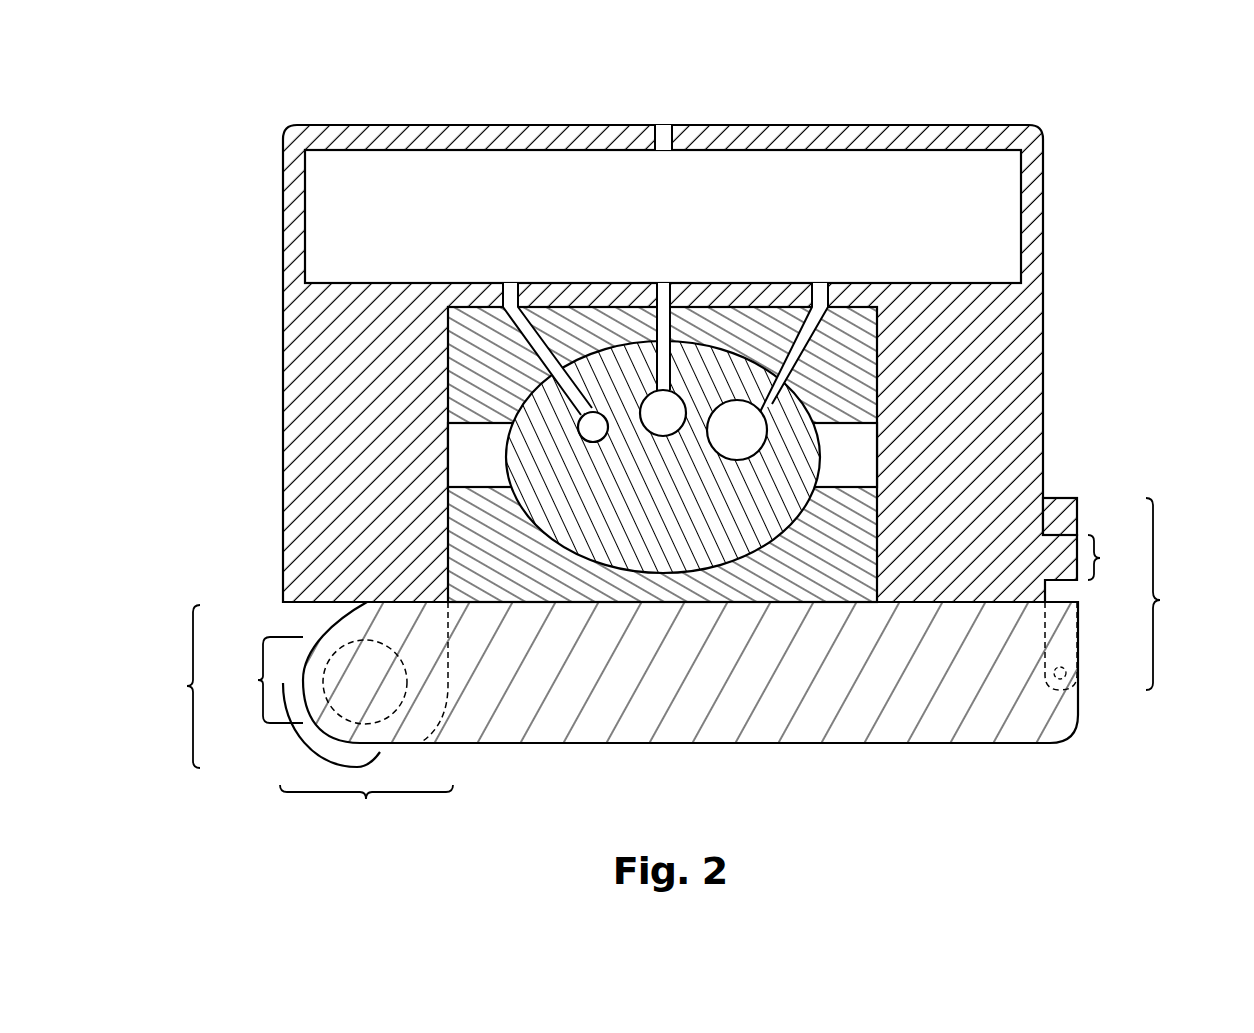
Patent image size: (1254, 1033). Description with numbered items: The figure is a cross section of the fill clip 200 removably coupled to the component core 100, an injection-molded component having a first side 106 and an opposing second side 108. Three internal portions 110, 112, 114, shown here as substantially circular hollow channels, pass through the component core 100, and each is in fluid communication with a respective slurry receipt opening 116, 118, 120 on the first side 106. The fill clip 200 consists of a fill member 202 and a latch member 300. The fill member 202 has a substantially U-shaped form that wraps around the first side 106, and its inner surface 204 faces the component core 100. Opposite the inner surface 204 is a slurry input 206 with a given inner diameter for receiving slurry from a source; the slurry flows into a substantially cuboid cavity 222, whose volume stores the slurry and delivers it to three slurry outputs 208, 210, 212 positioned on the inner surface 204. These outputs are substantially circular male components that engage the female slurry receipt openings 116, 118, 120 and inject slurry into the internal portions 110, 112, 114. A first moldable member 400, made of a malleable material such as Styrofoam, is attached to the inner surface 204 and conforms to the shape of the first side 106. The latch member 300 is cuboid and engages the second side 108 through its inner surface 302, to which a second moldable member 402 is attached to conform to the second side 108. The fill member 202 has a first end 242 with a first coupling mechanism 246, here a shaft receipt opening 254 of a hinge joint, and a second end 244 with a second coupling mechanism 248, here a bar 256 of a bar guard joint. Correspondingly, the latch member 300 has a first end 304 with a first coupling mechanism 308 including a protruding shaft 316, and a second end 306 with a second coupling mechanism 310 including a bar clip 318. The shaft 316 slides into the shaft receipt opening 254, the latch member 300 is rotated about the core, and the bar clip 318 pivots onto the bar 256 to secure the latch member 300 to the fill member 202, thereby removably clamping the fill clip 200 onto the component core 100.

The component core 100 is at (849, 447).
The first side 106 is at (593, 347).
The second side 108 is at (772, 545).
The internal portion 110 is at (593, 427).
The internal portion 112 is at (663, 413).
The internal portion 114 is at (737, 430).
The slurry receipt opening 116 is at (448, 432).
The slurry receipt opening 118 is at (672, 325).
The slurry receipt opening 120 is at (817, 370).
The fill clip 200 is at (990, 650).
The fill member 202 is at (312, 118).
The inner surface 204 is at (550, 370).
The slurry input 206 is at (663, 137).
The slurry output 208 is at (512, 307).
The slurry output 210 is at (663, 340).
The slurry output 212 is at (810, 323).
The cavity 222 is at (882, 197).
The first end 242 is at (380, 752).
The second end 244 is at (987, 578).
The first coupling mechanism 246 is at (170, 686).
The second coupling mechanism 248 is at (1118, 557).
The shaft receipt opening 254 is at (353, 640).
The bar 256 is at (1062, 553).
The latch member 300 is at (799, 756).
The inner surface 302 is at (690, 603).
The first end 304 is at (366, 809).
The second end 306 is at (930, 700).
The first coupling mechanism 308 is at (256, 680).
The second coupling mechanism 310 is at (1176, 594).
The shaft 316 is at (362, 692).
The bar clip 318 is at (1070, 512).
The first moldable member 400 is at (827, 323).
The second moldable member 402 is at (710, 582).